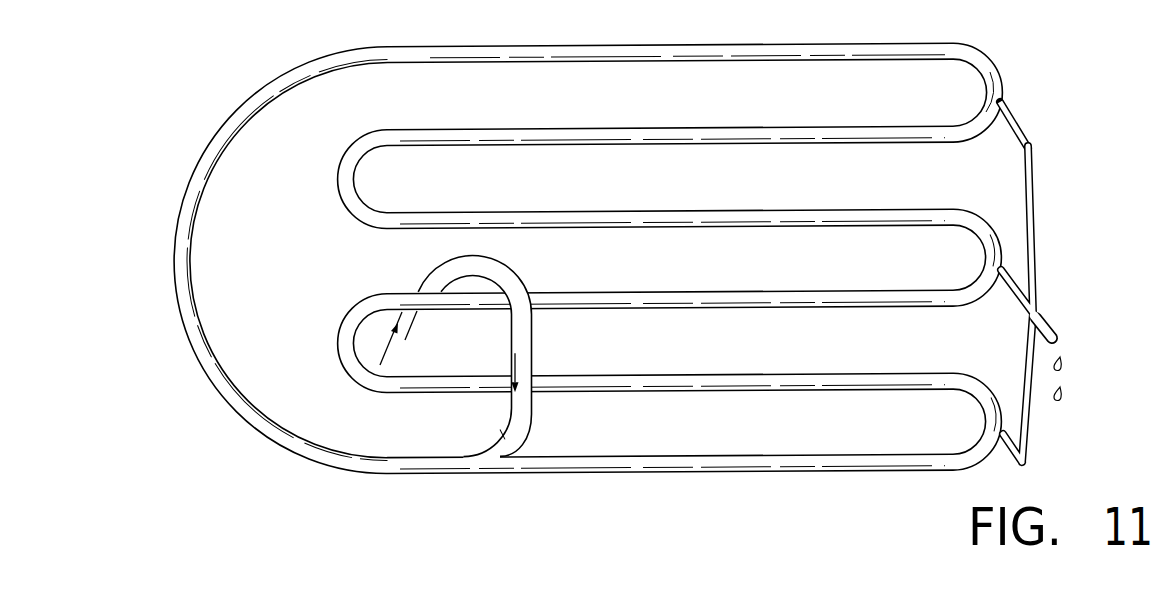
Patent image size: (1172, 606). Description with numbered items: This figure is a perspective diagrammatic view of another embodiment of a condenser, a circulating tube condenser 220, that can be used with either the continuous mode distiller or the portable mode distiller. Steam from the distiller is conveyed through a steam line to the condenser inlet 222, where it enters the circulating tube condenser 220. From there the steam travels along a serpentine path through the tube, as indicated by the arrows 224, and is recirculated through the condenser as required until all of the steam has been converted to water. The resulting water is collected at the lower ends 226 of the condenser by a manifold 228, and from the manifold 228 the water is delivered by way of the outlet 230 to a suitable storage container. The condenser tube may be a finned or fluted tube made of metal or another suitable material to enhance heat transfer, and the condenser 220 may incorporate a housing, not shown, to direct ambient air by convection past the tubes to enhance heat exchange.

The circulating tube condenser 220 is at (288, 71).
The condenser inlet 222 is at (409, 326).
The arrows 224 is at (524, 352).
The lower ends 226 is at (1013, 88).
The manifold 228 is at (1038, 288).
The outlet 230 is at (1056, 331).